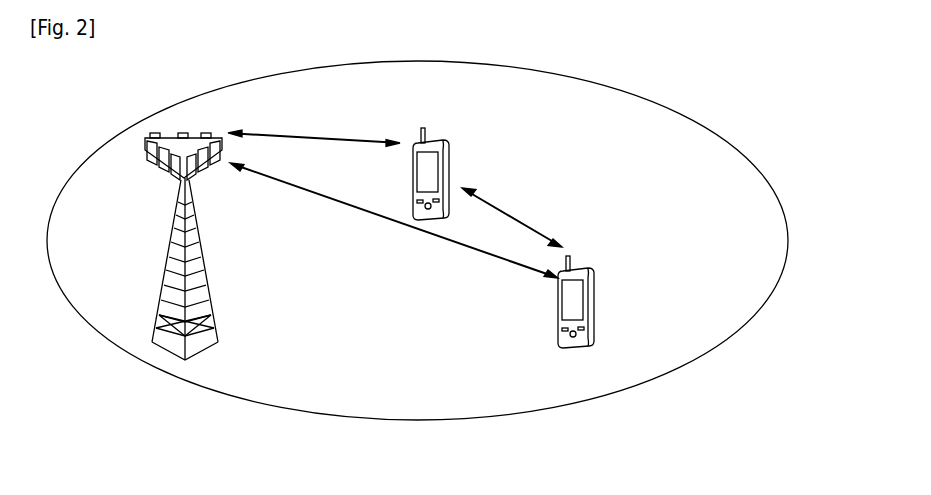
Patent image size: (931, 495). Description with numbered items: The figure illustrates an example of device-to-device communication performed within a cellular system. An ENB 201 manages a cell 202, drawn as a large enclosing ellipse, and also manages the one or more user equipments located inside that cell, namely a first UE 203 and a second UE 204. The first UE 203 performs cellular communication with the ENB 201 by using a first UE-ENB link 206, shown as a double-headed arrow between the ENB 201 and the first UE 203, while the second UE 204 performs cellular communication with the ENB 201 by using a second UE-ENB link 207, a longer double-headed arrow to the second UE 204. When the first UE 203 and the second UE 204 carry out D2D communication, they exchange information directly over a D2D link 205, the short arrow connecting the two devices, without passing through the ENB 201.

The ENB 201 is at (207, 263).
The cell 202 is at (632, 88).
The first UE 203 is at (427, 124).
The second UE 204 is at (586, 268).
The D2D link 205 is at (516, 213).
The first UE-ENB link 206 is at (318, 136).
The second UE-ENB link 207 is at (353, 211).